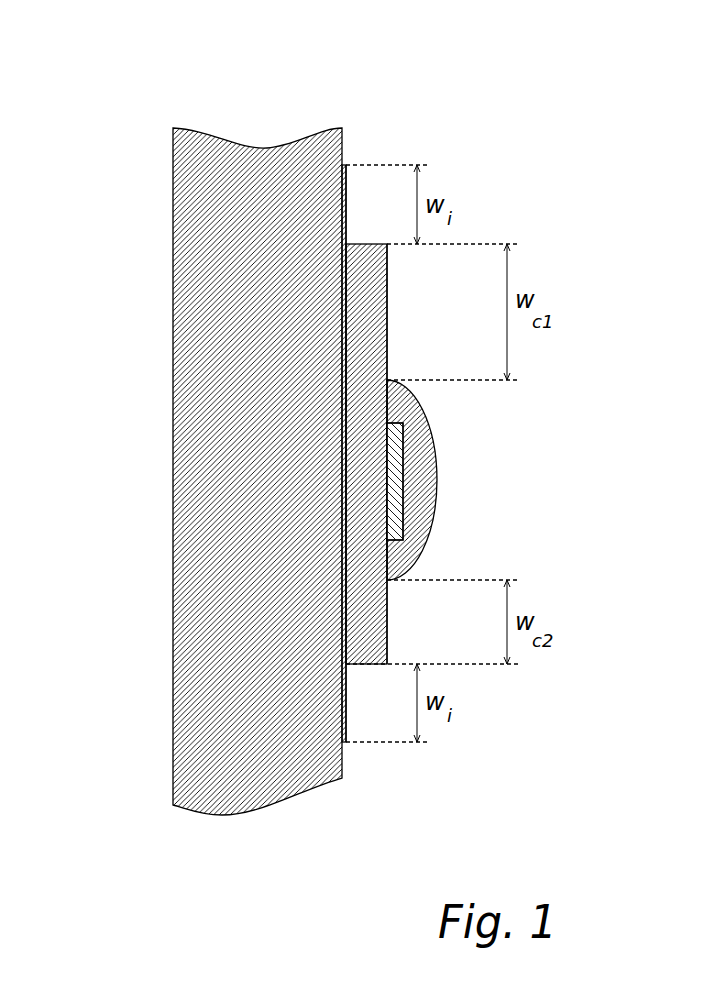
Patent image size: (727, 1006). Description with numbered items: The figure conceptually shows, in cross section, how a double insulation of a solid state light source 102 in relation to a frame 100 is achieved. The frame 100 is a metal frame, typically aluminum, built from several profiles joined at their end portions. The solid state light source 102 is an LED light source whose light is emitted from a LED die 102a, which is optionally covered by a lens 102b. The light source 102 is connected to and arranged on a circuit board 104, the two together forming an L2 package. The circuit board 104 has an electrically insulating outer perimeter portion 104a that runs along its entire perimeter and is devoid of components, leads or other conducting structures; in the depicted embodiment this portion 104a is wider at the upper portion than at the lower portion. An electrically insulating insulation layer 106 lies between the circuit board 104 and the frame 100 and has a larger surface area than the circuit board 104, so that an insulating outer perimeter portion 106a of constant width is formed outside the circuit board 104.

The frame 100 is at (173, 289).
The solid state light source 102 is at (476, 480).
The LED die 102a is at (405, 503).
The lens 102b is at (434, 447).
The circuit board 104 is at (373, 244).
The insulating outer perimeter portion 104a is at (387, 295).
The insulation layer 106 is at (348, 162).
The insulating outer perimeter portion 106a is at (347, 203).